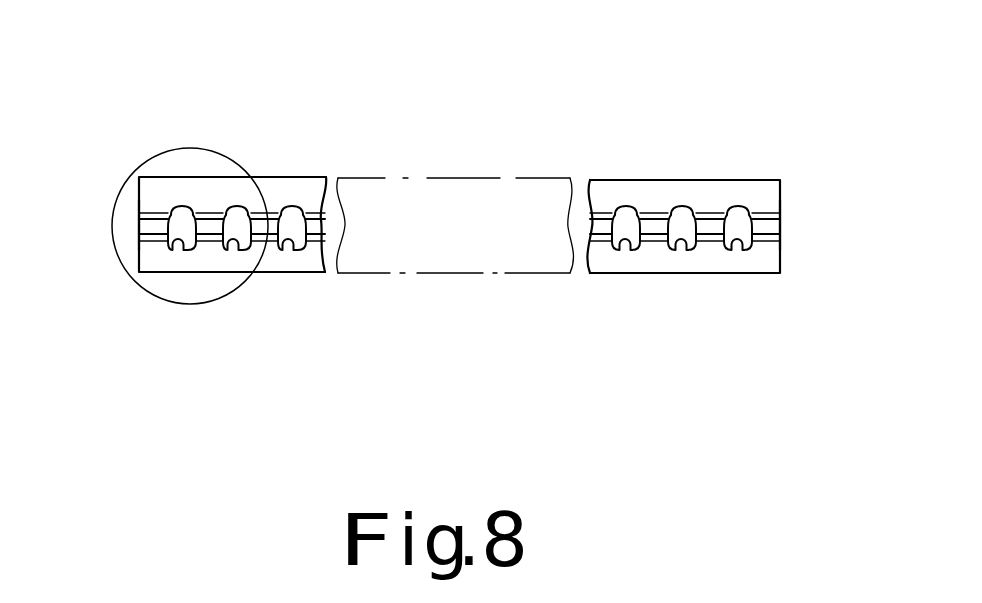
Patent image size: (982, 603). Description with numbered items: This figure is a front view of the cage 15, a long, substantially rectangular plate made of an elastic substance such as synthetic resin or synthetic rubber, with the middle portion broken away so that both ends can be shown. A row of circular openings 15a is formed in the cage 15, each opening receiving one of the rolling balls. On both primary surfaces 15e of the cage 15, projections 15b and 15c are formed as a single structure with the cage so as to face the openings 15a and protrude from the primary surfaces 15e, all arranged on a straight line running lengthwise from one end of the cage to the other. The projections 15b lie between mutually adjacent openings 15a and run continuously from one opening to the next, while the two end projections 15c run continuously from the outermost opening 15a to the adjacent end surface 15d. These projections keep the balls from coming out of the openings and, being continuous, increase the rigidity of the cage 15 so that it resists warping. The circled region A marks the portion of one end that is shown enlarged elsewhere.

The cage 15 is at (536, 151).
The circular openings 15a is at (745, 252).
The projections 15b is at (208, 218).
The projections 15c is at (154, 226).
The end surface 15d is at (138, 201).
The primary surfaces 15e is at (464, 192).
The enlarged region A is at (227, 298).